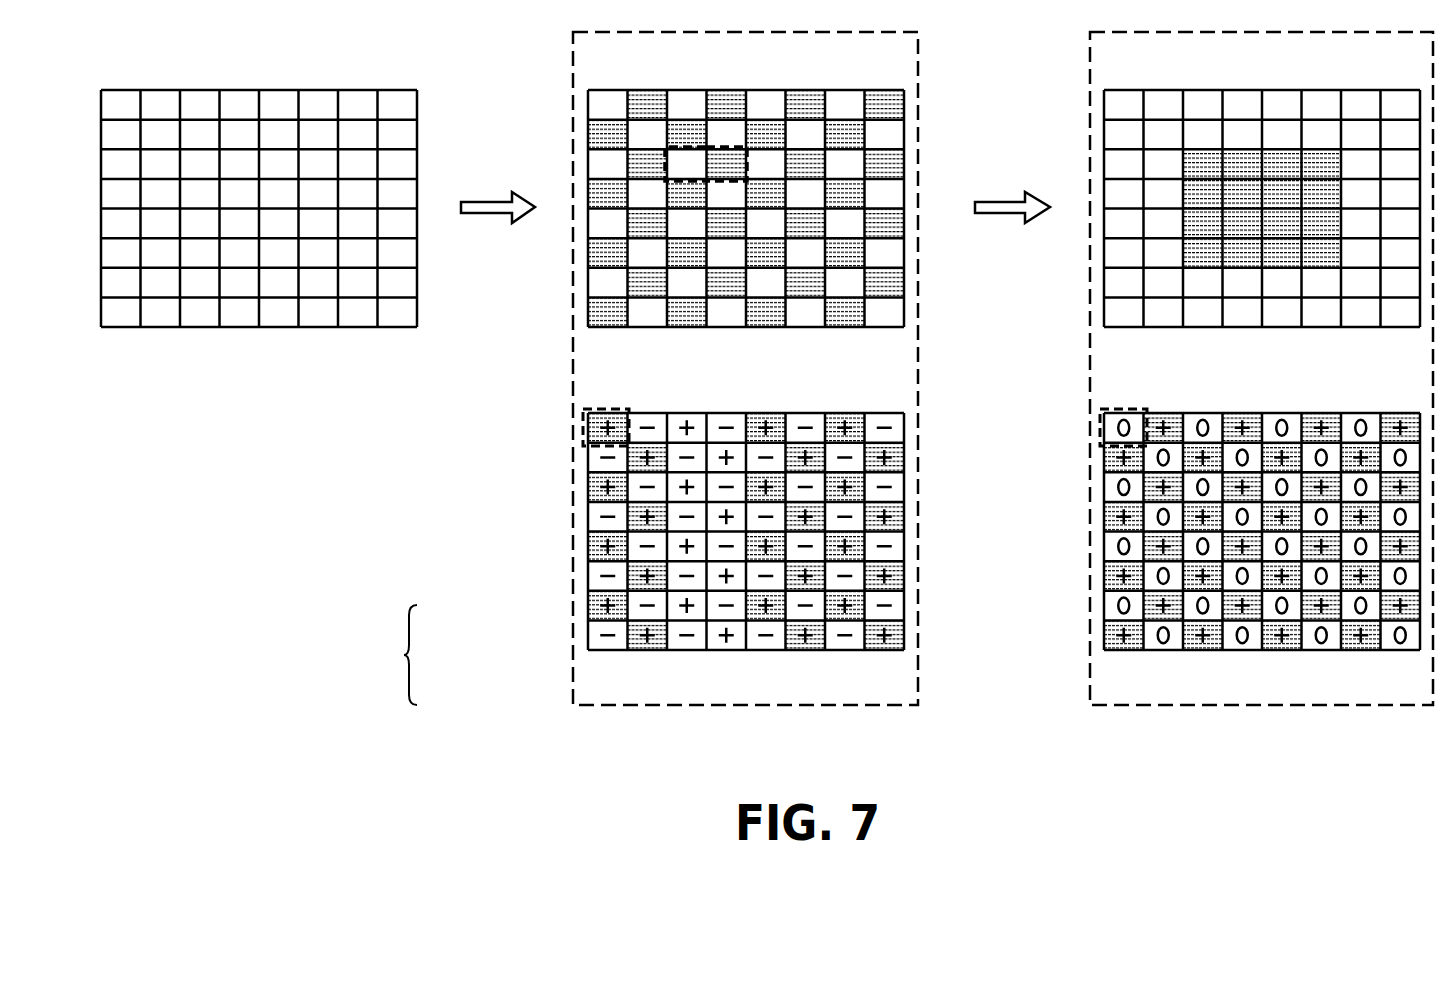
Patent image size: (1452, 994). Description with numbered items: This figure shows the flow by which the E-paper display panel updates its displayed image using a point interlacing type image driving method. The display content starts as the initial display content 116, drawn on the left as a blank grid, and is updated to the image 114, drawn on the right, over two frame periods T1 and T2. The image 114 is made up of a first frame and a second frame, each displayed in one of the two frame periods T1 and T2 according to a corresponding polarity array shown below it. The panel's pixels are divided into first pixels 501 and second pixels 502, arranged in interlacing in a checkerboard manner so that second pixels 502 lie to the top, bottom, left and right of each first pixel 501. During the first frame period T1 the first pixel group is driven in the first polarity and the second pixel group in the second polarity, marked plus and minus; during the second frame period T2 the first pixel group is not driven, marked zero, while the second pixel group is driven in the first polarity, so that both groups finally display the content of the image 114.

The initial display content 116 is at (317, 90).
The image 114 is at (890, 372).
The first pixel 501 is at (680, 140).
The second pixel 502 is at (736, 140).
The first frame period T1 is at (802, 705).
The second frame period T2 is at (1320, 705).